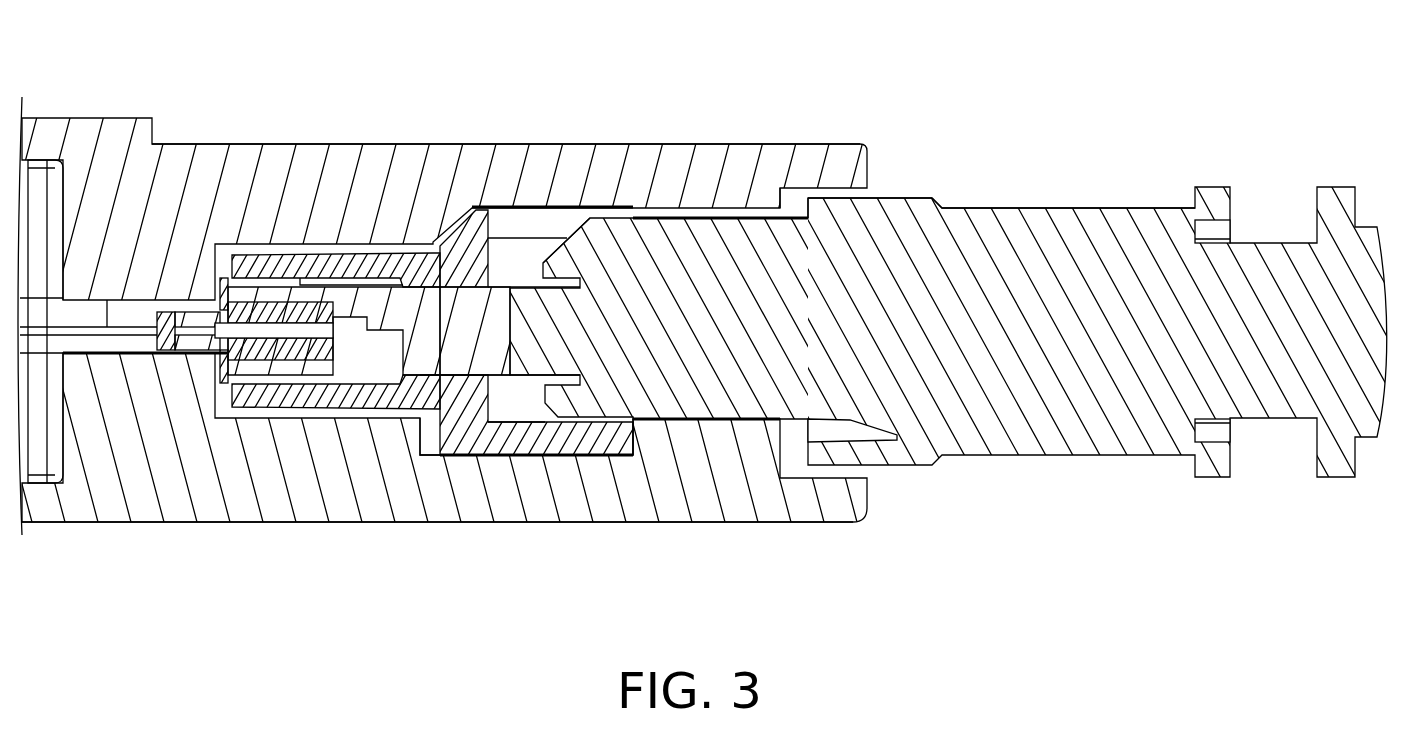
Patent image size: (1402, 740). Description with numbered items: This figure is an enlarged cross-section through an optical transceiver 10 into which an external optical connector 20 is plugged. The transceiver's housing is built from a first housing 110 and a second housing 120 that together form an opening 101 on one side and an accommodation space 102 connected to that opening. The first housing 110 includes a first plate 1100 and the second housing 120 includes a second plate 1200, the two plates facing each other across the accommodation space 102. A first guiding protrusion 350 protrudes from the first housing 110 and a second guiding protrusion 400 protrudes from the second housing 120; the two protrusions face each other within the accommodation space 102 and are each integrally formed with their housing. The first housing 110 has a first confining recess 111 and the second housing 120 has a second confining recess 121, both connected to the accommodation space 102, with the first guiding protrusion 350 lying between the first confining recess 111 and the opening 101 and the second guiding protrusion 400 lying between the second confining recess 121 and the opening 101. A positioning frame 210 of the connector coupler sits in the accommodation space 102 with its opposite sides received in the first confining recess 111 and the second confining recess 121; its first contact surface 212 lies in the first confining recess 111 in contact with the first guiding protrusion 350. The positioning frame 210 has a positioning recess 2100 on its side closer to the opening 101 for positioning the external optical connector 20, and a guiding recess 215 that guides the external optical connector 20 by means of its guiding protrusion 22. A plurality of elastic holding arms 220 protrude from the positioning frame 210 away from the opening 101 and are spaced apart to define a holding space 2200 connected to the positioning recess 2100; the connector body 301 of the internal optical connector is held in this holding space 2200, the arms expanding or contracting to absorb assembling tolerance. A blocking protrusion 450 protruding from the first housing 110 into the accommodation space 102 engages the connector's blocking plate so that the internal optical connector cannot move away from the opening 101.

The optical transceiver 10 is at (283, 52).
The external optical connector 20 is at (1088, 146).
The first housing 110 is at (407, 581).
The second housing 120 is at (410, 99).
The first plate 1100 is at (565, 495).
The second plate 1200 is at (358, 165).
The first confining recess 111 is at (451, 447).
The second confining recess 121 is at (488, 253).
The guiding recess 215 is at (544, 195).
The positioning frame 210 is at (516, 405).
The positioning recess 2100 is at (523, 442).
The holding space 2200 is at (369, 345).
The elastic holding arms 220 is at (247, 262).
The guiding protrusion 22 is at (590, 237).
The first contact surface 212 is at (648, 445).
The connector body 301 is at (222, 283).
The blocking protrusion 450 is at (257, 413).
The first guiding protrusion 350 is at (800, 463).
The second guiding protrusion 400 is at (770, 252).
The opening 101 is at (886, 192).
The accommodation space 102 is at (834, 192).